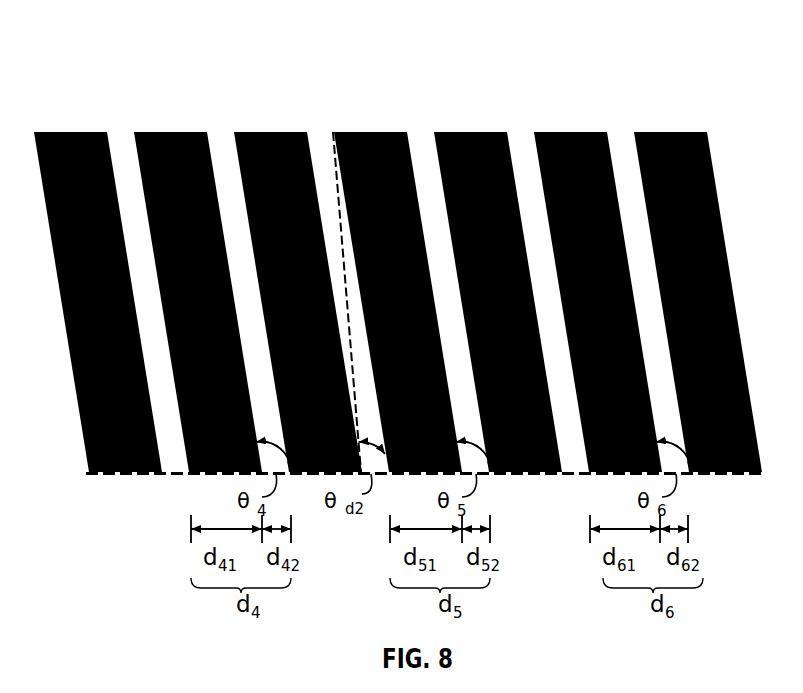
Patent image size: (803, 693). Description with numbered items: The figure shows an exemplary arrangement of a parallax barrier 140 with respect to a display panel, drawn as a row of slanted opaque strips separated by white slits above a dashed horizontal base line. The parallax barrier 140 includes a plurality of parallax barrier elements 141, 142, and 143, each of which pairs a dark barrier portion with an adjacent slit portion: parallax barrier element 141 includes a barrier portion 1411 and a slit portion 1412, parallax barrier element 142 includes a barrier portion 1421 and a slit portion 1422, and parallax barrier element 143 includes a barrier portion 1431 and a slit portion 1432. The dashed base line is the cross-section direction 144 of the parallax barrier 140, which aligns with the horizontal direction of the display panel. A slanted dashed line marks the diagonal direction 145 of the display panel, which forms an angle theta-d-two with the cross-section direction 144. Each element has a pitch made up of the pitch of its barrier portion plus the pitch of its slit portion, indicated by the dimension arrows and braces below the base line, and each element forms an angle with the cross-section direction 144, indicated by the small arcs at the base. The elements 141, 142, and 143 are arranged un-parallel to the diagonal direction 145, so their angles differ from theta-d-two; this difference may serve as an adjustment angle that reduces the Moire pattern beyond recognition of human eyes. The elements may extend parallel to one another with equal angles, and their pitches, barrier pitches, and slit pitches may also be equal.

The parallax barrier 140 is at (408, 244).
The parallax barrier element 141 is at (211, 244).
The barrier portion 1411 is at (164, 132).
The slit portion 1412 is at (220, 132).
The parallax barrier element 142 is at (411, 244).
The barrier portion 1421 is at (365, 132).
The slit portion 1422 is at (420, 132).
The parallax barrier element 143 is at (611, 244).
The barrier portion 1431 is at (564, 132).
The slit portion 1432 is at (620, 132).
The cross-section direction 144 is at (177, 474).
The diagonal direction 145 is at (333, 132).